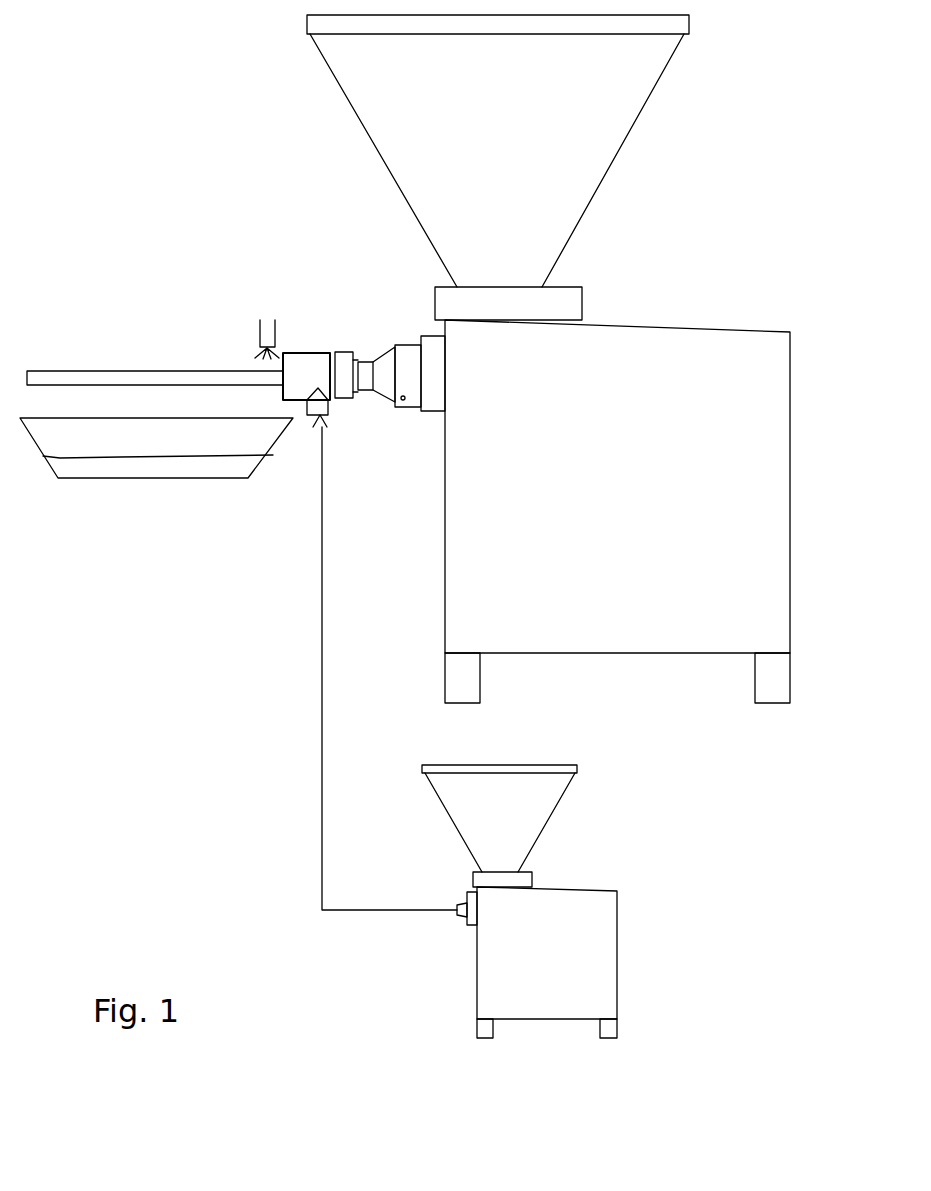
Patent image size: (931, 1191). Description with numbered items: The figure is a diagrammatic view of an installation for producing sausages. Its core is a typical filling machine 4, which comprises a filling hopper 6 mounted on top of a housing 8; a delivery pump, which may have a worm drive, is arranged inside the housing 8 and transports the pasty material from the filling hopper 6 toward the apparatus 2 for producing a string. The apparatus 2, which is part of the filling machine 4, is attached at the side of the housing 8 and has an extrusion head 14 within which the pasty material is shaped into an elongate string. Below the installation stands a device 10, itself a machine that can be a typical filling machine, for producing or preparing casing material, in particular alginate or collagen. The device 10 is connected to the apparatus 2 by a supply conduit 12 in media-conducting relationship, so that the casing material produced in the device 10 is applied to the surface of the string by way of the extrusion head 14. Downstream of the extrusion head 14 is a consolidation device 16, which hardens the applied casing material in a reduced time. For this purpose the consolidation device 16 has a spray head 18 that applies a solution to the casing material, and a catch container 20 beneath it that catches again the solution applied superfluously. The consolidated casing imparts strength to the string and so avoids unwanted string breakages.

The apparatus for producing a string 2 is at (320, 318).
The filling machine 4 is at (687, 223).
The filling hopper 6 is at (593, 110).
The housing 8 is at (683, 377).
The device for producing or preparing casing material 10 is at (560, 912).
The supply conduit 12 is at (323, 648).
The extrusion head 14 is at (305, 357).
The consolidation device 16 is at (163, 323).
The spray head 18 is at (258, 333).
The catch container 20 is at (160, 467).